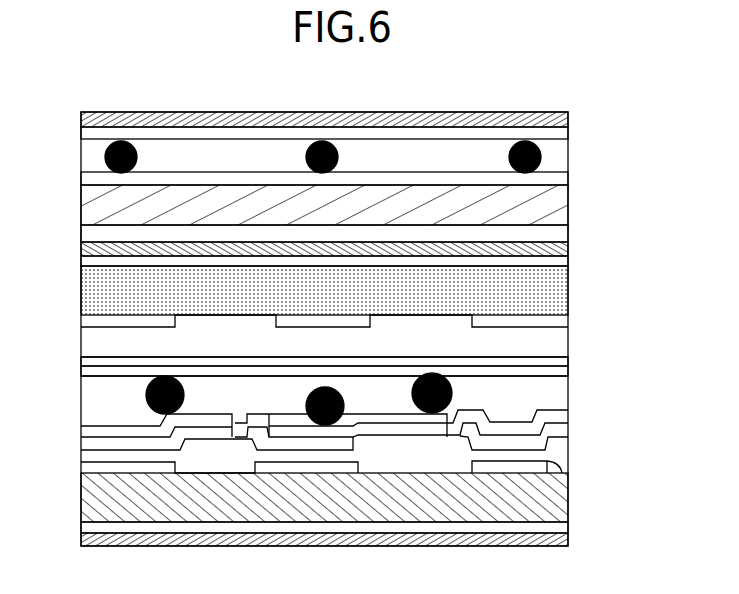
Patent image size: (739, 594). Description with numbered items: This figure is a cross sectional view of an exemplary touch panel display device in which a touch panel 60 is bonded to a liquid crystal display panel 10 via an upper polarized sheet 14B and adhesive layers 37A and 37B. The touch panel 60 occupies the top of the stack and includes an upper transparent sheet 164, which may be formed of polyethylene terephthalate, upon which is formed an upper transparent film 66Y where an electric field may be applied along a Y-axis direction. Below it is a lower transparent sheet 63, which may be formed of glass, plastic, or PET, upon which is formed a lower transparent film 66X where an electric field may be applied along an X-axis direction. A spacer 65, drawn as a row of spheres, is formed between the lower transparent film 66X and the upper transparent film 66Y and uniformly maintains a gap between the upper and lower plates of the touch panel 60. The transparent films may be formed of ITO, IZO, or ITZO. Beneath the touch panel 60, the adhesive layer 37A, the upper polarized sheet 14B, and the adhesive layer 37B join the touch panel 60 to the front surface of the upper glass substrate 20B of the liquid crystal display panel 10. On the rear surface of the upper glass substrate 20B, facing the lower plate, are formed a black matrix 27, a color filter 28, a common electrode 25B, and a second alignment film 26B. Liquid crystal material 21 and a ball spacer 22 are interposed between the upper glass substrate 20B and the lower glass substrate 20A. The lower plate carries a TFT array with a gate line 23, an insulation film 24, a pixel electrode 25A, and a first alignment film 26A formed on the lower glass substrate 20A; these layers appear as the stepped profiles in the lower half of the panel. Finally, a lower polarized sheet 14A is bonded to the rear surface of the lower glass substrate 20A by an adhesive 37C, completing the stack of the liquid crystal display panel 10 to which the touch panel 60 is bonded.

The upper transparent sheet 164 is at (566, 113).
The upper transparent film 66Y is at (566, 131).
The spacer 65 is at (541, 157).
The lower transparent film 66X is at (566, 178).
The lower transparent sheet 63 is at (566, 197).
The adhesive layer 37A is at (566, 223).
The upper polarized sheet 14B is at (566, 246).
The adhesive layer 37B is at (566, 261).
The upper glass substrate 20B is at (566, 281).
The black matrix 27 is at (566, 320).
The color filter 28 is at (566, 338).
The common electrode 25B is at (566, 357).
The second alignment film 26B is at (566, 370).
The liquid crystal material 21 is at (566, 393).
The first alignment film 26A is at (566, 413).
The pixel electrode 25A is at (566, 430).
The insulation film 24 is at (566, 447).
The gate line 23 is at (566, 467).
The lower glass substrate 20A is at (566, 496).
The adhesive 37C is at (566, 525).
The lower polarized sheet 14A is at (566, 545).
The ball spacer 22 is at (453, 393).
The touch panel 60 is at (632, 100).
The liquid crystal display panel 10 is at (638, 215).